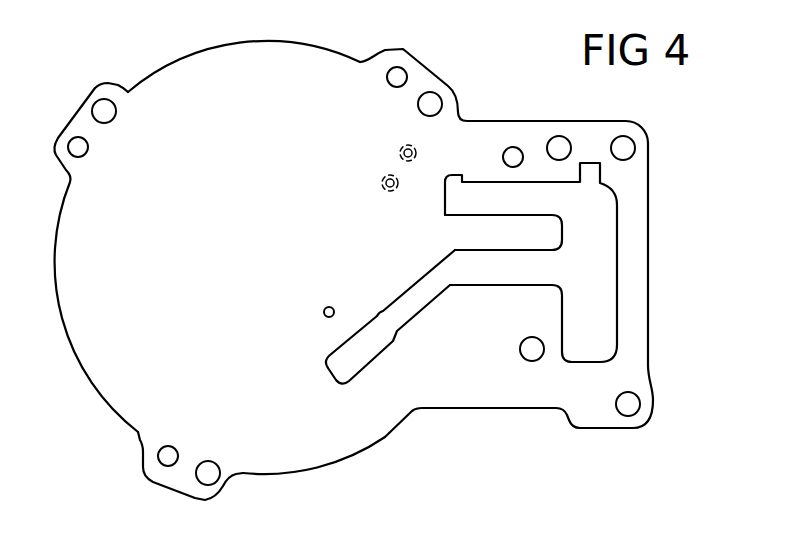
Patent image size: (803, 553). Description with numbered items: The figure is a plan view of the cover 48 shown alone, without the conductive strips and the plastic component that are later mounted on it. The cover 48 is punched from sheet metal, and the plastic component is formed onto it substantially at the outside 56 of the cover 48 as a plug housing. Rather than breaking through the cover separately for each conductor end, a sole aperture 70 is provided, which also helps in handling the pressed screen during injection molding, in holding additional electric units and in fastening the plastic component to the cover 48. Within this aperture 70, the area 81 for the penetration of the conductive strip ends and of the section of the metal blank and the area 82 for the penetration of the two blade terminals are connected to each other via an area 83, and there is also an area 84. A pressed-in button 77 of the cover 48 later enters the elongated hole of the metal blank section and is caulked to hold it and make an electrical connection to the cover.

The cover 48 is at (138, 44).
The outside of the cover 56 is at (333, 77).
The aperture 70 is at (590, 270).
The pressed-in button 77 is at (325, 307).
The area for penetration of the ends and metal blank section 81 is at (357, 362).
The area for penetration of the blade terminals 82 is at (608, 349).
The connecting area 83 is at (493, 275).
The area 84 is at (487, 190).